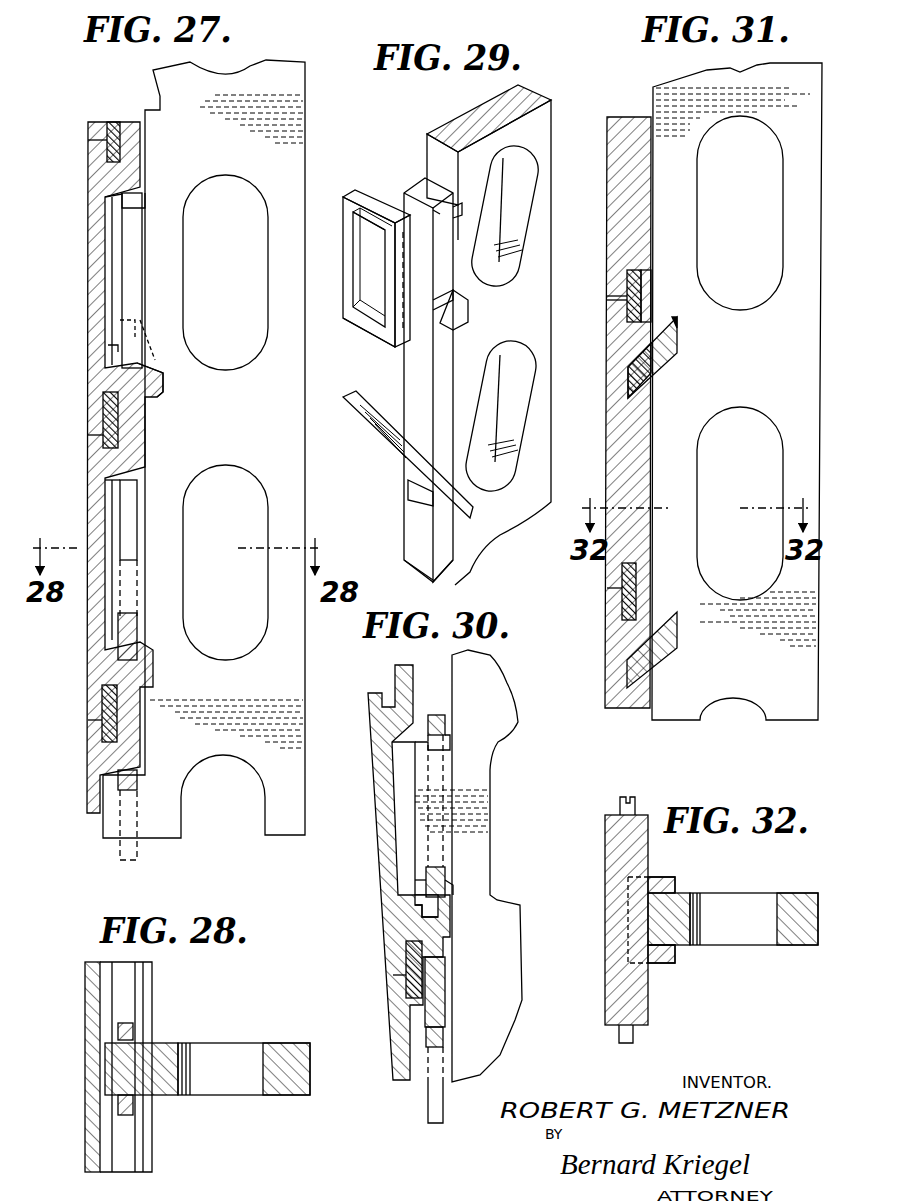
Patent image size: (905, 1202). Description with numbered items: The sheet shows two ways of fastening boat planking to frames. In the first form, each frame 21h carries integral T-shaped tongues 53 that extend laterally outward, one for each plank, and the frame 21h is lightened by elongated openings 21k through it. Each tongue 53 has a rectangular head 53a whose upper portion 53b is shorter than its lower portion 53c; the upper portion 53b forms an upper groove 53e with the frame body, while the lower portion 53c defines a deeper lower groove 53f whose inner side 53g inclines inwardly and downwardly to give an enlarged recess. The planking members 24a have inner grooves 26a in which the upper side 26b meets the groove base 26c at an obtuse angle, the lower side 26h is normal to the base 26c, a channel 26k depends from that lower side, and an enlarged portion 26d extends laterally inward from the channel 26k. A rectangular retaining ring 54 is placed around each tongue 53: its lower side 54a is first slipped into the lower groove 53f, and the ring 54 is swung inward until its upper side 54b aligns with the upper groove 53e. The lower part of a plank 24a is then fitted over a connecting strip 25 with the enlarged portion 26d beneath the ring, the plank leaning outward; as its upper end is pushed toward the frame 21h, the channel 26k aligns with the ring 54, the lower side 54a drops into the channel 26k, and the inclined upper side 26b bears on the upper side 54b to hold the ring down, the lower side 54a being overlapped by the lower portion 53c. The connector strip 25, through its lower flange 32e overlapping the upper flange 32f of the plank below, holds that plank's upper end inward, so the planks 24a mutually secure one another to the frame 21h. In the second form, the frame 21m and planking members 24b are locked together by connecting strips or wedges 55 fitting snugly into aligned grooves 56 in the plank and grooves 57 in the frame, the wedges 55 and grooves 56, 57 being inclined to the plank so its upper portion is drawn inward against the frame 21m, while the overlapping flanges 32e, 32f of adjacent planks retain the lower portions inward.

In FIG. 27, the frame 21h is at (305, 153).
In FIG. 28, the frame 21h is at (287, 1040).
In FIG. 30, the frame 21h is at (480, 800).
In FIG. 27, the elongated openings 21k is at (262, 352).
In FIG. 28, the elongated openings 21k is at (184, 1085).
In FIG. 29, the elongated openings 21k is at (515, 142).
In FIG. 31, the frame 21m is at (777, 385).
In FIG. 32, the frame 21m is at (800, 893).
In FIG. 27, the planking members 24a is at (98, 306).
In FIG. 28, the planking members 24a is at (92, 1006).
In FIG. 30, the planking members 24a is at (395, 855).
In FIG. 29, the planking members 24b is at (606, 225).
In FIG. 31, the planking members 24b is at (606, 226).
In FIG. 32, the planking members 24b is at (606, 998).
In FIG. 27, the connecting strip 25 is at (104, 135).
In FIG. 30, the connecting strip 25 is at (425, 990).
In FIG. 31, the connecting strip 25 is at (627, 285).
In FIG. 27, the inner groove 26a is at (112, 262).
In FIG. 28, the inner groove 26a is at (108, 1126).
In FIG. 27, the upper side of groove 26b is at (125, 203).
In FIG. 27, the groove base 26c is at (105, 218).
In FIG. 27, the enlarged portion 26d is at (152, 360).
In FIG. 27, the lower side of groove 26h is at (113, 350).
In FIG. 27, the channel 26k is at (160, 378).
In FIG. 30, the lower flange 32e is at (400, 975).
In FIG. 31, the lower flange 32e is at (612, 298).
In FIG. 30, the upper flange 32f is at (445, 962).
In FIG. 31, the upper flange 32f is at (648, 296).
In FIG. 28, the T-shaped tongue 53 is at (115, 1060).
In FIG. 29, the T-shaped tongue 53 is at (443, 253).
In FIG. 30, the head 53a is at (420, 828).
In FIG. 29, the upper portion 53b is at (437, 216).
In FIG. 30, the upper portion 53b is at (425, 748).
In FIG. 29, the lower portion 53c is at (428, 505).
In FIG. 30, the lower portion 53c is at (420, 888).
In FIG. 29, the upper groove 53e is at (453, 210).
In FIG. 30, the upper groove 53e is at (447, 748).
In FIG. 29, the lower groove 53f is at (446, 296).
In FIG. 30, the lower groove 53f is at (450, 880).
In FIG. 29, the inner side of lower groove 53g is at (462, 305).
In FIG. 30, the inner side of lower groove 53g is at (458, 890).
In FIG. 27, the retaining ring 54 is at (130, 265).
In FIG. 28, the retaining ring 54 is at (126, 1022).
In FIG. 29, the retaining ring 54 is at (338, 277).
In FIG. 30, the retaining ring 54 is at (428, 1110).
In FIG. 27, the lower side of ring 54a is at (137, 640).
In FIG. 29, the lower side of ring 54a is at (372, 338).
In FIG. 30, the lower side of ring 54a is at (418, 900).
In FIG. 27, the upper side of ring 54b is at (137, 780).
In FIG. 29, the upper side of ring 54b is at (362, 215).
In FIG. 30, the upper side of ring 54b is at (445, 722).
In FIG. 31, the connecting strip or wedge 55 is at (660, 372).
In FIG. 32, the connecting strip or wedge 55 is at (660, 965).
In FIG. 31, the groove 56 is at (628, 375).
In FIG. 32, the groove 56 is at (630, 905).
In FIG. 31, the groove 57 is at (678, 343).